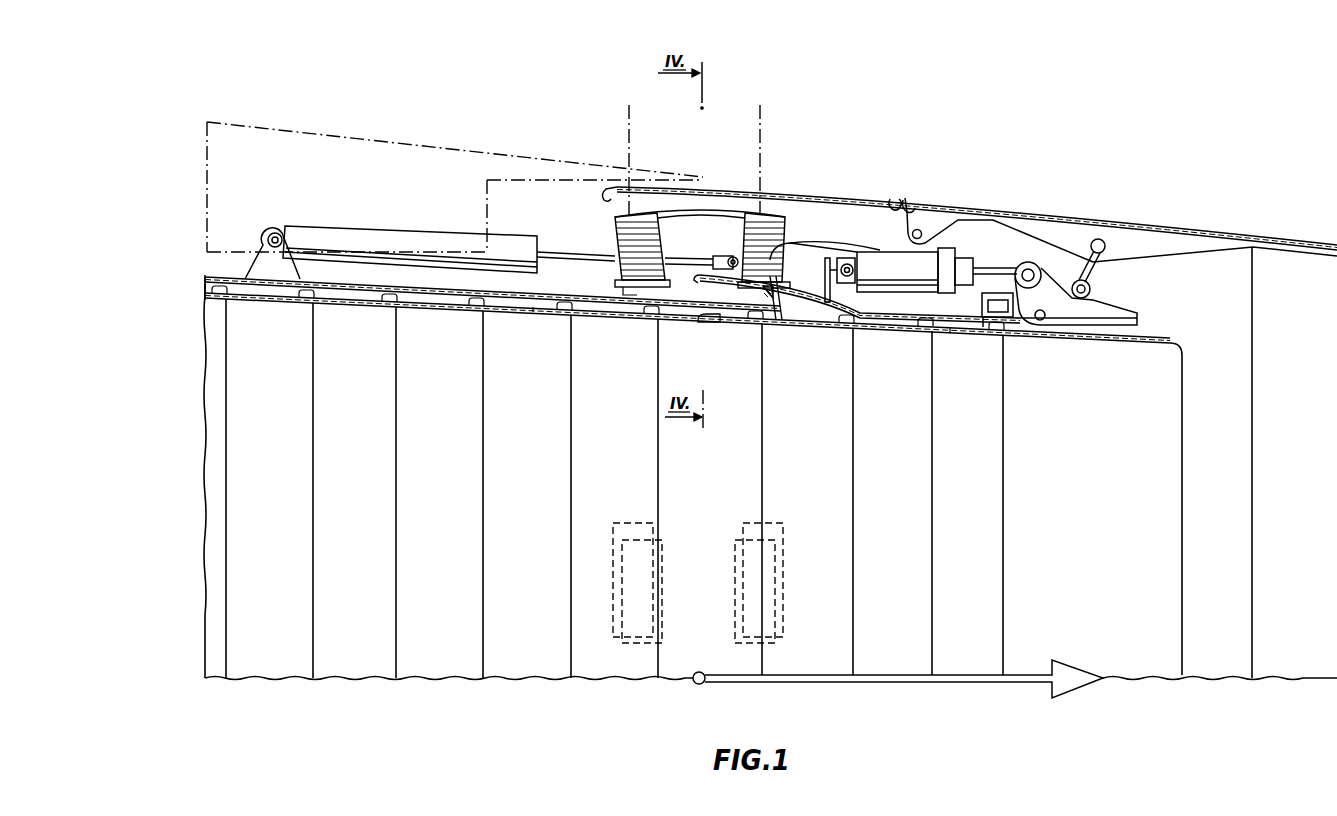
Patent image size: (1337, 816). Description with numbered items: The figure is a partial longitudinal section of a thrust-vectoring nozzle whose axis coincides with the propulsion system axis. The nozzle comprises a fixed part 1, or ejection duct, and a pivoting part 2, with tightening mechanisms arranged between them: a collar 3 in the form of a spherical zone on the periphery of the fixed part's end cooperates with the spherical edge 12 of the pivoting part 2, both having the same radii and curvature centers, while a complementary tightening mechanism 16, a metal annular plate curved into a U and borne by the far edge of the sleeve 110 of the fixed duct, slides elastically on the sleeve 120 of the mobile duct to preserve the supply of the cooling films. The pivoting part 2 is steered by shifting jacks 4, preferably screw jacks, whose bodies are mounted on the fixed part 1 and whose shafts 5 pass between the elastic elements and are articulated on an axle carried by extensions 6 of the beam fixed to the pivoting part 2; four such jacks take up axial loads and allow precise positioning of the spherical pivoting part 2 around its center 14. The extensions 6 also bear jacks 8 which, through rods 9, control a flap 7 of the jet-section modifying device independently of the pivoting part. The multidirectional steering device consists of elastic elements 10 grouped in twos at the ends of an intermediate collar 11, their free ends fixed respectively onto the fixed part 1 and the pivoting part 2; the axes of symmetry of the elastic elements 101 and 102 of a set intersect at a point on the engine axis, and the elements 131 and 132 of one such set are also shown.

The fixed part 1 is at (522, 300).
The pivoting part 2 is at (797, 284).
The collar 3 is at (773, 320).
The shifting jack 4 is at (403, 237).
The jack shaft 5 is at (554, 249).
The extension 6 is at (838, 248).
The flap 7 is at (1160, 227).
The jack 8 is at (888, 262).
The rod 9 is at (1094, 275).
The elastic element 10 is at (628, 232).
The intermediate collar 11 is at (694, 212).
The spherical edge 12 is at (813, 305).
The center 14 is at (699, 671).
The complementary tightening mechanism 16 is at (707, 320).
The elastic element 101 is at (643, 270).
The elastic element 102 is at (760, 263).
The sleeve 110 is at (547, 313).
The sleeve 120 is at (963, 332).
The element 131 is at (632, 588).
The element 132 is at (770, 587).